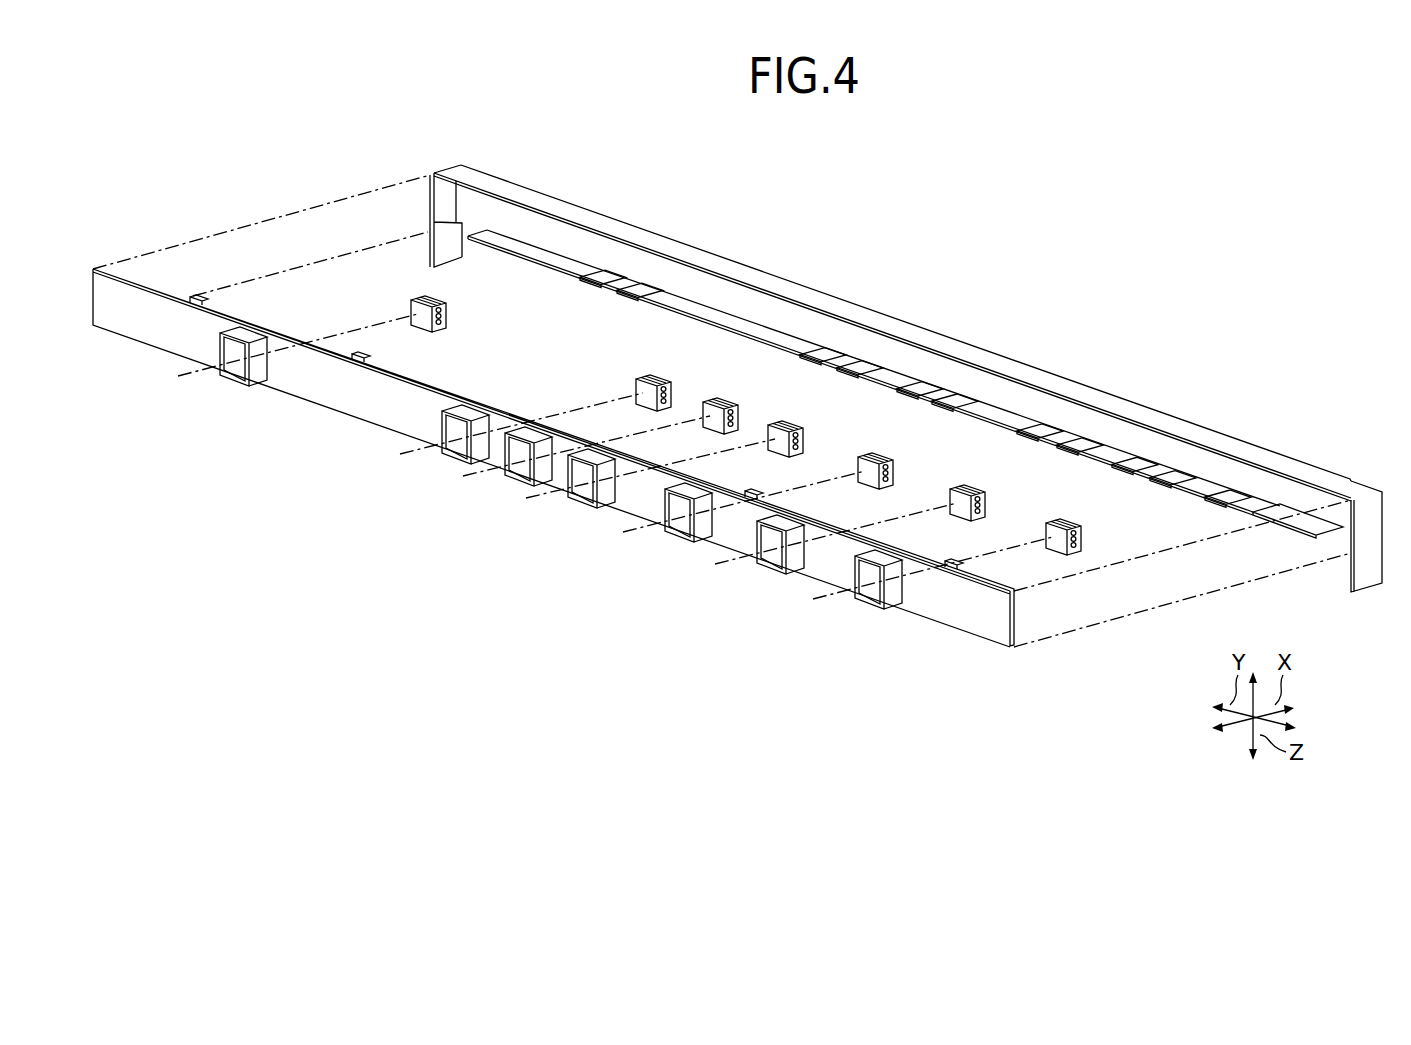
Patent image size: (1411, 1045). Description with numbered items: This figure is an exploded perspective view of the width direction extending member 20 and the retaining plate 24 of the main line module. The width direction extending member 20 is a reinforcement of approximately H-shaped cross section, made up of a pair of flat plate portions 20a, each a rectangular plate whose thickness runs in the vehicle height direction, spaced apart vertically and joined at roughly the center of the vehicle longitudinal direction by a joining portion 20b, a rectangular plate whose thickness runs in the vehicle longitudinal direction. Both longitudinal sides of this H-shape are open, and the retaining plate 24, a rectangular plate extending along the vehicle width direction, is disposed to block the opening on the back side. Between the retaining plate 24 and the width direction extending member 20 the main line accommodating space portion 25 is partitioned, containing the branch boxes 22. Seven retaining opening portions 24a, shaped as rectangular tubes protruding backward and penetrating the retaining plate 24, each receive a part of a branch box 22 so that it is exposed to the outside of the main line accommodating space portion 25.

The width direction extending member 20 is at (737, 384).
The flat plate portion 20a is at (486, 185).
The joining portion 20b is at (757, 308).
The branch box 22 is at (446, 298).
The retaining plate 24 is at (988, 613).
The retaining opening portion 24a is at (233, 383).
The main line accommodating space portion 25 is at (1190, 467).